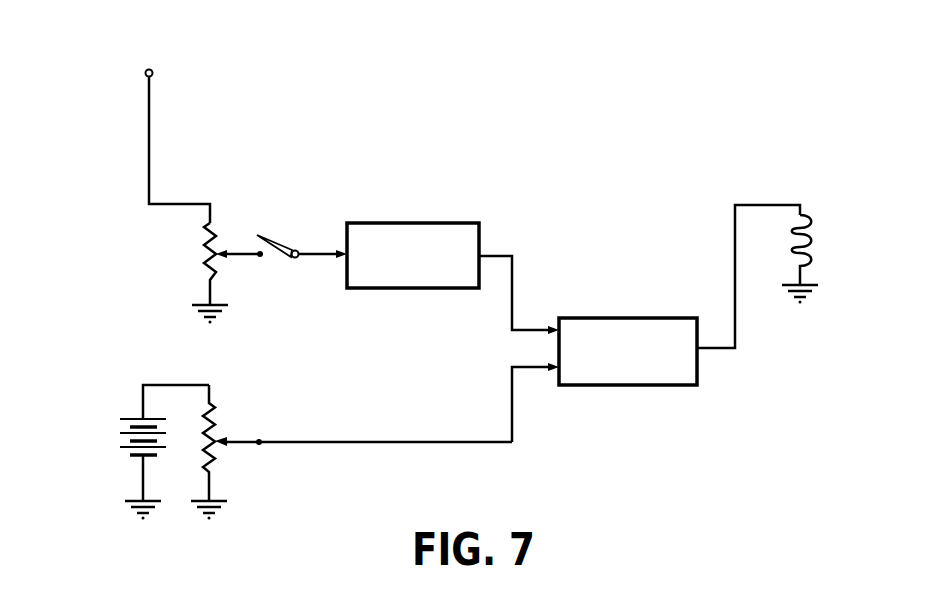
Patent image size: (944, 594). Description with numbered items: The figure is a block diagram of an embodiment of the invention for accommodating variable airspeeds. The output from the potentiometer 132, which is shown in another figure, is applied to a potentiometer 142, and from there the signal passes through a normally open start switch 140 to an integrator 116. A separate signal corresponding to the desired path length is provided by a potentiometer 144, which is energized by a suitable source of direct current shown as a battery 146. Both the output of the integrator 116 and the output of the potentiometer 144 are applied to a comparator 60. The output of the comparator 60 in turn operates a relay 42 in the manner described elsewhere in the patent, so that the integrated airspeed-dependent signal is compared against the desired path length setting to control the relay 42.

The potentiometer 132 is at (227, 117).
The potentiometer 142 is at (190, 247).
The normally open start switch 140 is at (275, 265).
The integrator 116 is at (408, 222).
The comparator 60 is at (636, 386).
The relay 42 is at (817, 251).
The potentiometer 144 is at (234, 418).
The battery 146 is at (108, 433).